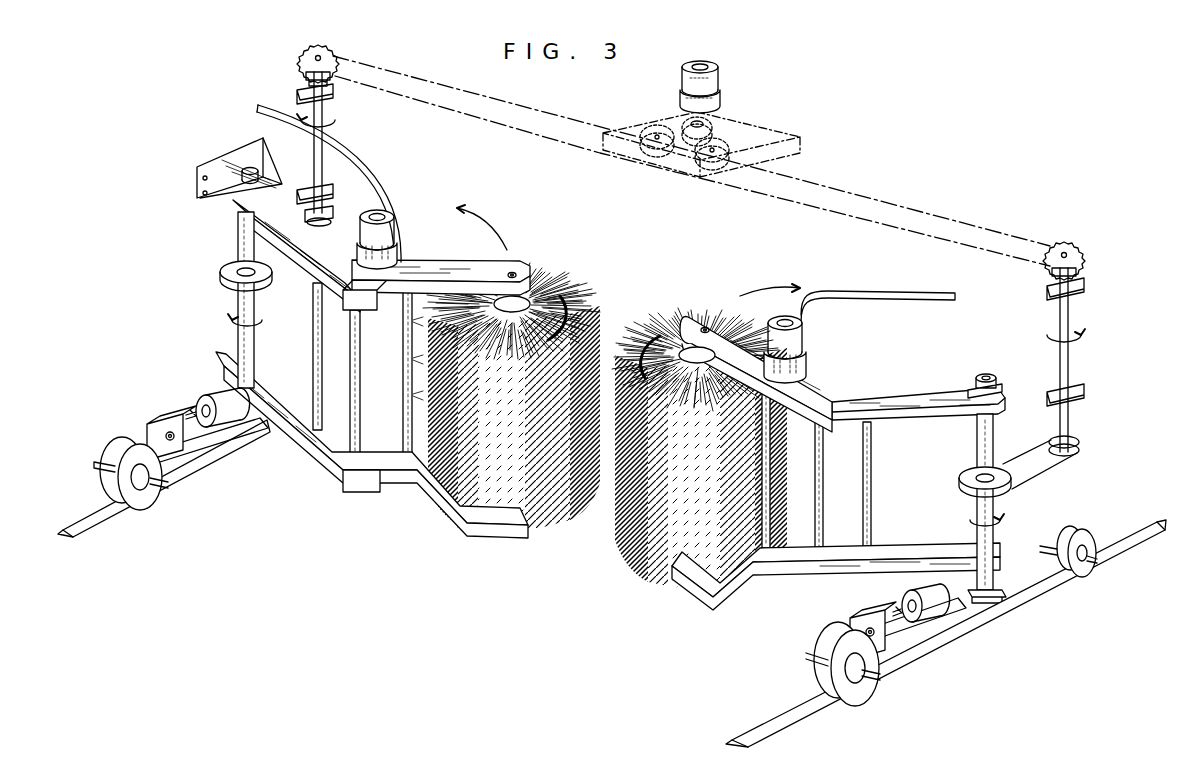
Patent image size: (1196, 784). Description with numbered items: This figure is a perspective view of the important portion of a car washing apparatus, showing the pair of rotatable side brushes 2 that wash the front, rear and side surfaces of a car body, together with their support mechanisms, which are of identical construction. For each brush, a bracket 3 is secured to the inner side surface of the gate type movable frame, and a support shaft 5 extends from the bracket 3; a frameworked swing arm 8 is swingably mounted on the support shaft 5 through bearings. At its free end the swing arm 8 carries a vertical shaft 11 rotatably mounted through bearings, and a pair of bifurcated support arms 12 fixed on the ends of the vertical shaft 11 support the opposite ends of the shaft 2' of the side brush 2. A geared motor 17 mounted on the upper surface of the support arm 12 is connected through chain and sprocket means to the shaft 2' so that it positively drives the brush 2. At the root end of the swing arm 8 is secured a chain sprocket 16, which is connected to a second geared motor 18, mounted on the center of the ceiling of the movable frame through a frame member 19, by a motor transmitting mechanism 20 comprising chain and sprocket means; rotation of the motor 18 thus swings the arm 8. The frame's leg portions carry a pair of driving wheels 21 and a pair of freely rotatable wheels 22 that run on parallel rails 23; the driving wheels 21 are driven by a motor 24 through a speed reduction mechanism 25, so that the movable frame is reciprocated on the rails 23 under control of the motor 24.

The rotatable side brush 2 is at (611, 396).
The shaft of the rotatable side brush 2' is at (618, 278).
The bracket 3 is at (257, 148).
The support shaft 5 is at (240, 324).
The swing arm 8 is at (240, 212).
The vertical shaft 11 is at (360, 370).
The bifurcated support arm 12 is at (432, 261).
The chain sprocket 16 is at (222, 268).
The geared motor 17 is at (390, 214).
The geared motor 18 is at (714, 66).
The frame member 19 is at (772, 132).
The motor transmitting mechanism 20 is at (343, 138).
The driving wheel 21 is at (116, 490).
The freely rotatable wheel 22 is at (1088, 538).
The rail 23 is at (90, 520).
The motor 24 is at (212, 398).
The speed reduction mechanism 25 is at (158, 420).